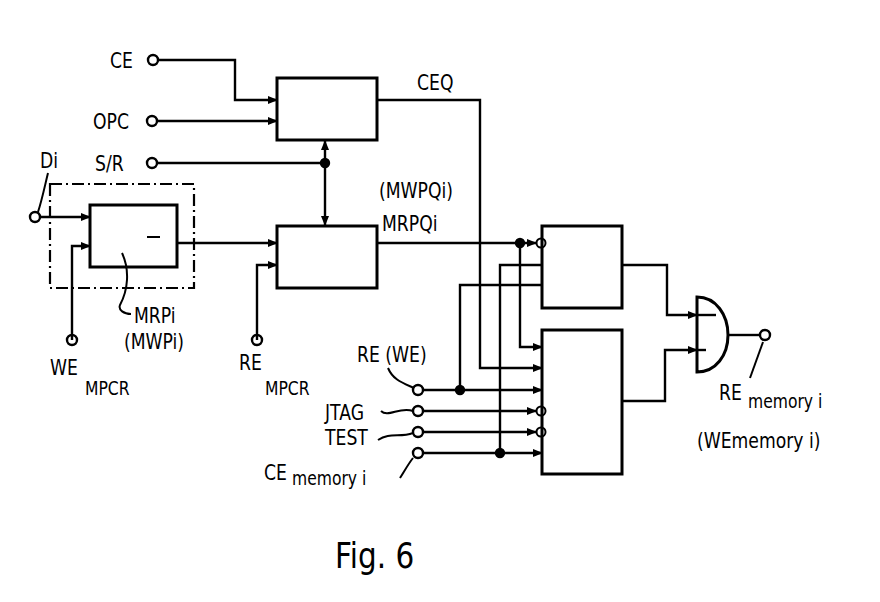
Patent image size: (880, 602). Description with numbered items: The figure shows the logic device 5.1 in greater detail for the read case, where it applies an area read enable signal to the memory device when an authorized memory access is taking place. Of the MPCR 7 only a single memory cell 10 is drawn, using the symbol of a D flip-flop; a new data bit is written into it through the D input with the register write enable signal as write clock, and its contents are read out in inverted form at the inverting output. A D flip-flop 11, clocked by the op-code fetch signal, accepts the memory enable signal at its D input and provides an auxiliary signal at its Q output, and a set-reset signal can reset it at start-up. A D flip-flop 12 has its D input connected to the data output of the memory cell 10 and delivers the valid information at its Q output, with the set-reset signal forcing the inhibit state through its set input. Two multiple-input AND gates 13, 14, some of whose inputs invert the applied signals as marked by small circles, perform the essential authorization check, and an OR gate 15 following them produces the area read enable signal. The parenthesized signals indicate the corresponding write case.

The logic device 5.1 is at (603, 162).
The MPCR 7 is at (195, 222).
The memory cell 10 is at (178, 258).
The D flip-flop 11 is at (332, 78).
The D flip-flop 12 is at (295, 288).
The first AND gate 13 is at (622, 237).
The second AND gate 14 is at (622, 463).
The OR gate 15 is at (712, 301).